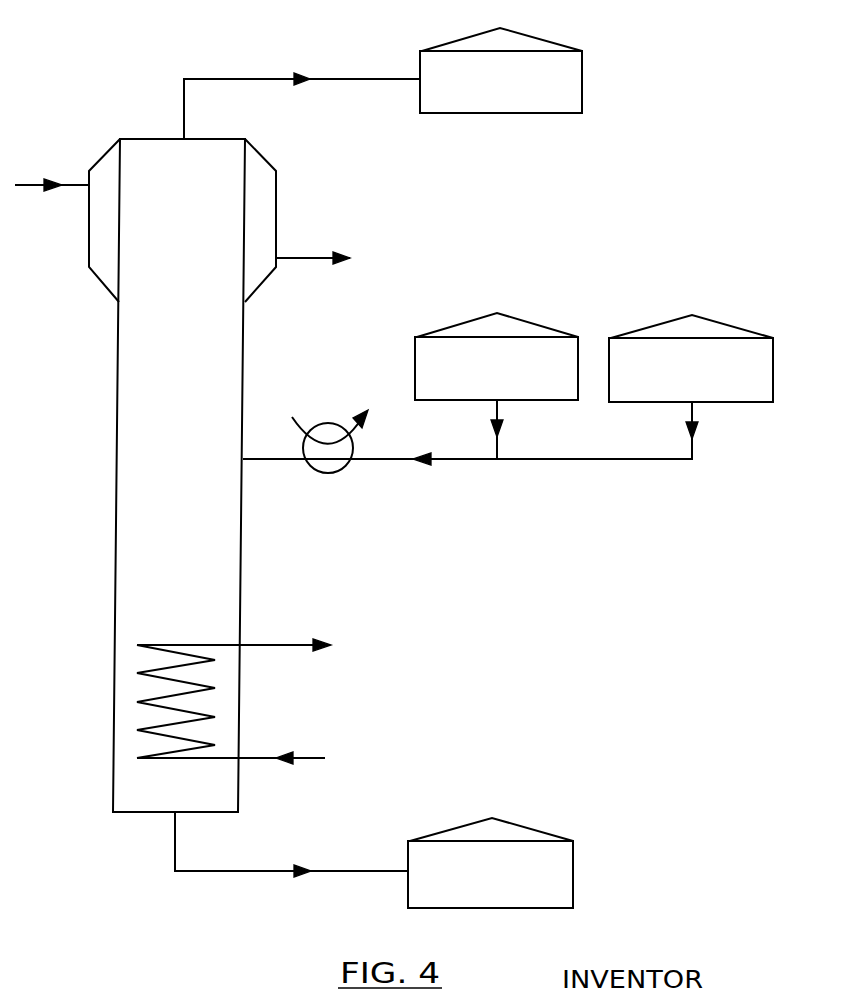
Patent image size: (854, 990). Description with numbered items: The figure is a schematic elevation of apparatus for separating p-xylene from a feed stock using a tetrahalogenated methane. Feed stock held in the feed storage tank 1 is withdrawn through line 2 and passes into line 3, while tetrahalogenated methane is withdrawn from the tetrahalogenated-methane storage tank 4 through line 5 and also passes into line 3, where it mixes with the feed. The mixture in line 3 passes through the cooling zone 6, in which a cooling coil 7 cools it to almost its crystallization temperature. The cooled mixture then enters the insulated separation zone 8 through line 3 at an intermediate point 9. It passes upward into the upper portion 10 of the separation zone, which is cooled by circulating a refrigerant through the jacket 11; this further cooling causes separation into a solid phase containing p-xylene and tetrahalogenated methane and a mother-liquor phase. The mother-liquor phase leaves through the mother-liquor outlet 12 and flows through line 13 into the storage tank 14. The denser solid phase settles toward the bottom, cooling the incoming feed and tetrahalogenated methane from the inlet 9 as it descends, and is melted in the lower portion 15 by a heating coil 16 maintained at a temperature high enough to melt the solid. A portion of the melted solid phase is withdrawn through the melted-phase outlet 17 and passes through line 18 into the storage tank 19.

The feed storage tank 1 is at (530, 320).
The line 2 is at (498, 447).
The line 3 is at (447, 462).
The tetrahalogenated-methane storage tank 4 is at (717, 323).
The line 5 is at (595, 462).
The cooling zone 6 is at (325, 472).
The cooling coil 7 is at (323, 420).
The insulated separation zone 8 is at (243, 402).
The intermediate point 9 is at (243, 462).
The upper portion 10 is at (220, 290).
The jacket 11 is at (89, 233).
The mother-liquor outlet 12 is at (183, 137).
The line 13 is at (224, 79).
The storage tank 14 is at (532, 33).
The lower portion 15 is at (130, 630).
The heating coil 16 is at (142, 700).
The melted-phase outlet 17 is at (175, 817).
The line 18 is at (232, 871).
The storage tank 19 is at (520, 827).